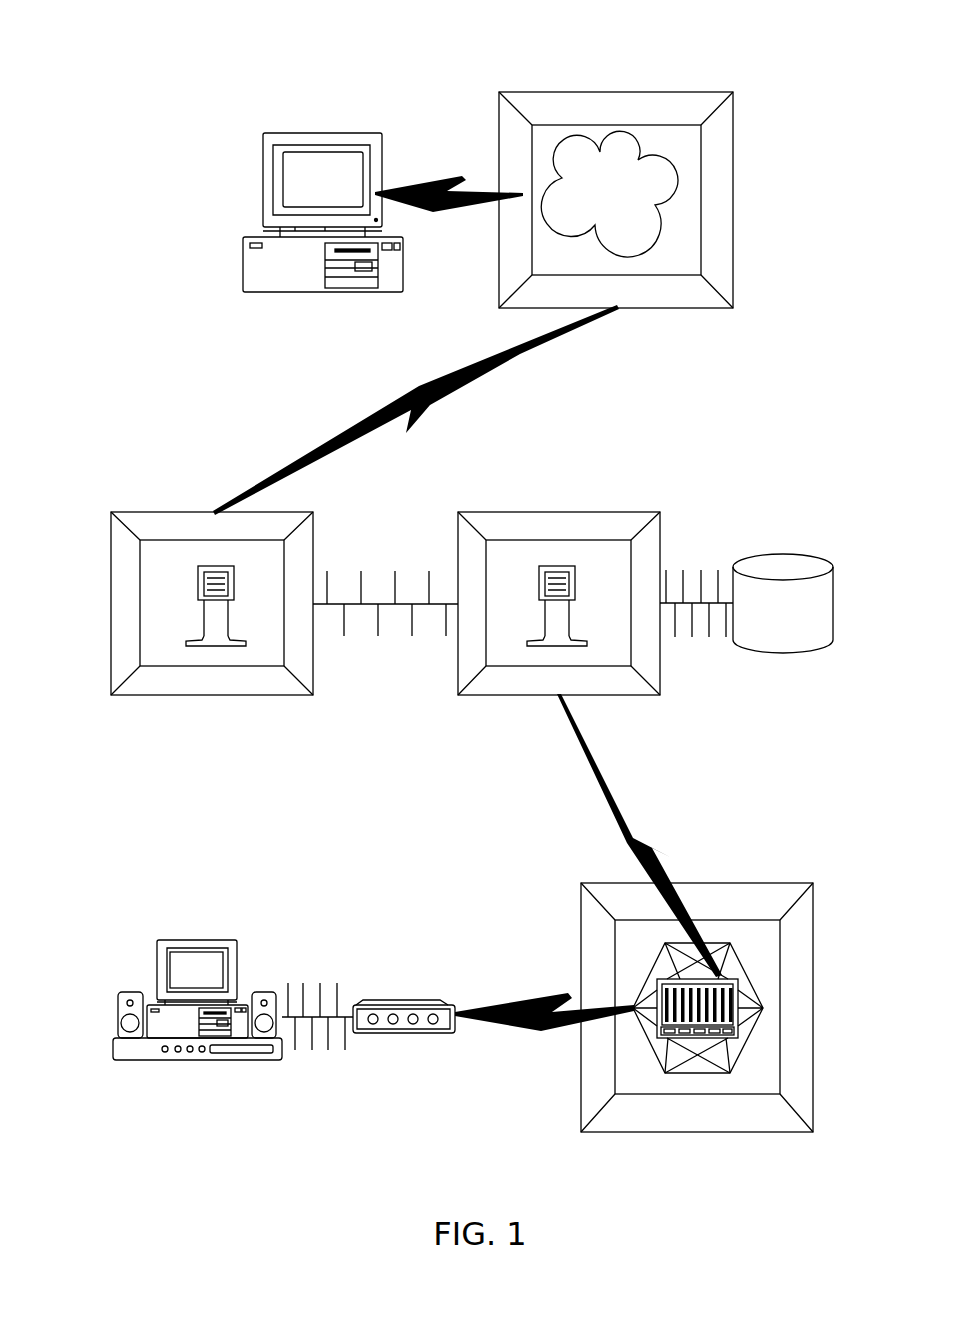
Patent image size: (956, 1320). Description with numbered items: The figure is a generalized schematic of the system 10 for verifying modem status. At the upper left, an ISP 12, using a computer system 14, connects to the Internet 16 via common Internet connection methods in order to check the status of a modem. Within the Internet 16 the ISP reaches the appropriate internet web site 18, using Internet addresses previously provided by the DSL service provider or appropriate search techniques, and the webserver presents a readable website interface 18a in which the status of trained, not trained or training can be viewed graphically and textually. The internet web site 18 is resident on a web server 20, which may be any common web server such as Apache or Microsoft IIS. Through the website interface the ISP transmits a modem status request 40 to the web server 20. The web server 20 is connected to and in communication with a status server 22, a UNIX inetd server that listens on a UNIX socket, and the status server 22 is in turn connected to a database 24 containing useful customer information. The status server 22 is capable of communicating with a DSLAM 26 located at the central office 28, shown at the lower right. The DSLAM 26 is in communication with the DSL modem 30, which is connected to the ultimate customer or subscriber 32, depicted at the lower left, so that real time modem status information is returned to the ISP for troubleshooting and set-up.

The system 10 is at (395, 68).
The ISP 12 is at (304, 152).
The computer system 14 is at (263, 265).
The Internet 16 is at (720, 169).
The internet web site 18 is at (629, 209).
The website interface 18a is at (692, 266).
The web server 20 is at (168, 517).
The status server 22 is at (603, 517).
The database 24 is at (806, 628).
The DSLAM 26 is at (730, 1052).
The central office 28 is at (664, 990).
The DSL modem 30 is at (383, 1027).
The subscriber 32 is at (137, 1052).
The modem status request 40 is at (470, 382).